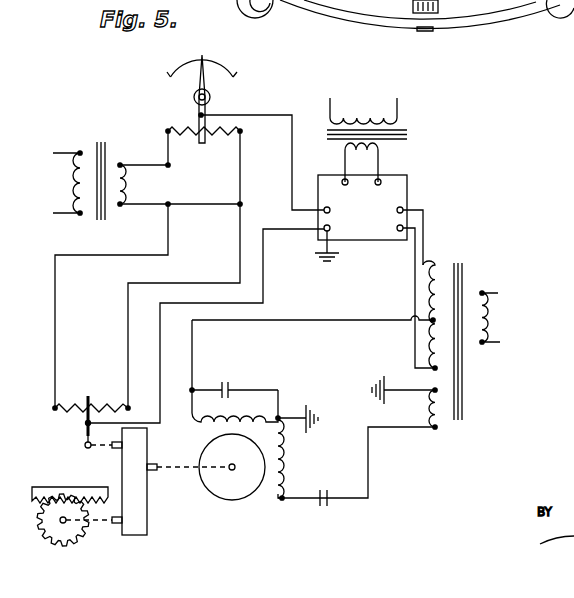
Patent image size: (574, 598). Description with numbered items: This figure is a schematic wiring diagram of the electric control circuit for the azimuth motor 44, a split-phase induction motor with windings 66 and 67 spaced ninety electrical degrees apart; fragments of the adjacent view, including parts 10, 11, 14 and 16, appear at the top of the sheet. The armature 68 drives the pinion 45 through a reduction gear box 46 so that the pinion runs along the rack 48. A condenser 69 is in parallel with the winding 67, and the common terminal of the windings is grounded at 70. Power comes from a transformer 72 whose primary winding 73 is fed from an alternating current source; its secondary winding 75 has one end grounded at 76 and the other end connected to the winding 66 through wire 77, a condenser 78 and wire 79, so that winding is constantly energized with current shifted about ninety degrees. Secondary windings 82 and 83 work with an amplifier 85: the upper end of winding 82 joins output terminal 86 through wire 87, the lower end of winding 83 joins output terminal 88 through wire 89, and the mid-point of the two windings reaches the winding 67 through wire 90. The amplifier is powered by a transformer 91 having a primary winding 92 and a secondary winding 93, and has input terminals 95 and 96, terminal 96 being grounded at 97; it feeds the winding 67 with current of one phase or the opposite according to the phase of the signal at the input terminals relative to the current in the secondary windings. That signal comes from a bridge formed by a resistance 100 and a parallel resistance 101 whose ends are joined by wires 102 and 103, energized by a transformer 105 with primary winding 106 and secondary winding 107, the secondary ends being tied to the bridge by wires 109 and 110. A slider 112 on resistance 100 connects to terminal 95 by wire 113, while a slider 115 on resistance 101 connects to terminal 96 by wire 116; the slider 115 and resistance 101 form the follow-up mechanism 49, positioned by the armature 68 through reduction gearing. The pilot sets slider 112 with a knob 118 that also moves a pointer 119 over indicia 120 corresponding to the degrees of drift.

The housing 10 is at (518, 3).
The wheel 11 is at (262, 10).
The block 14 is at (455, 4).
The bracket 16 is at (420, 31).
The motor 44 is at (262, 505).
The pinion 45 is at (70, 541).
The reduction gear box 46 is at (136, 508).
The rack 48 is at (83, 487).
The follow-up mechanism 49 is at (80, 431).
The motor winding 66 is at (284, 452).
The motor winding 67 is at (224, 414).
The armature 68 is at (228, 491).
The condenser 69 is at (230, 384).
The ground 70 is at (308, 410).
The transformer 72 is at (468, 352).
The primary winding 73 is at (490, 315).
The secondary winding 75 is at (430, 410).
The ground 76 is at (384, 376).
The wire 77 is at (369, 471).
The condenser 78 is at (330, 501).
The wire 79 is at (303, 500).
The secondary winding 82 is at (428, 297).
The secondary winding 83 is at (430, 341).
The amplifier 85 is at (368, 231).
The output terminal 86 is at (405, 210).
The wire 87 is at (425, 236).
The output terminal 88 is at (405, 228).
The wire 89 is at (414, 273).
The wire 90 is at (297, 320).
The transformer 91 is at (412, 128).
The primary winding 92 is at (368, 110).
The secondary winding 93 is at (379, 158).
The input terminal 95 is at (322, 213).
The input terminal 96 is at (320, 232).
The ground 97 is at (318, 255).
The electrical resistance 100 is at (221, 134).
The electrical resistance 101 is at (102, 400).
The wire 102 is at (170, 229).
The wire 103 is at (239, 259).
The transformer 105 is at (62, 146).
The primary winding 106 is at (72, 181).
The secondary winding 107 is at (126, 185).
The wire 109 is at (140, 164).
The wire 110 is at (211, 203).
The slider 112 is at (198, 116).
The wire 113 is at (283, 113).
The slider 115 is at (85, 397).
The wire 116 is at (161, 338).
The knob 118 is at (211, 97).
The pointer 119 is at (195, 78).
The indicia 120 is at (222, 60).